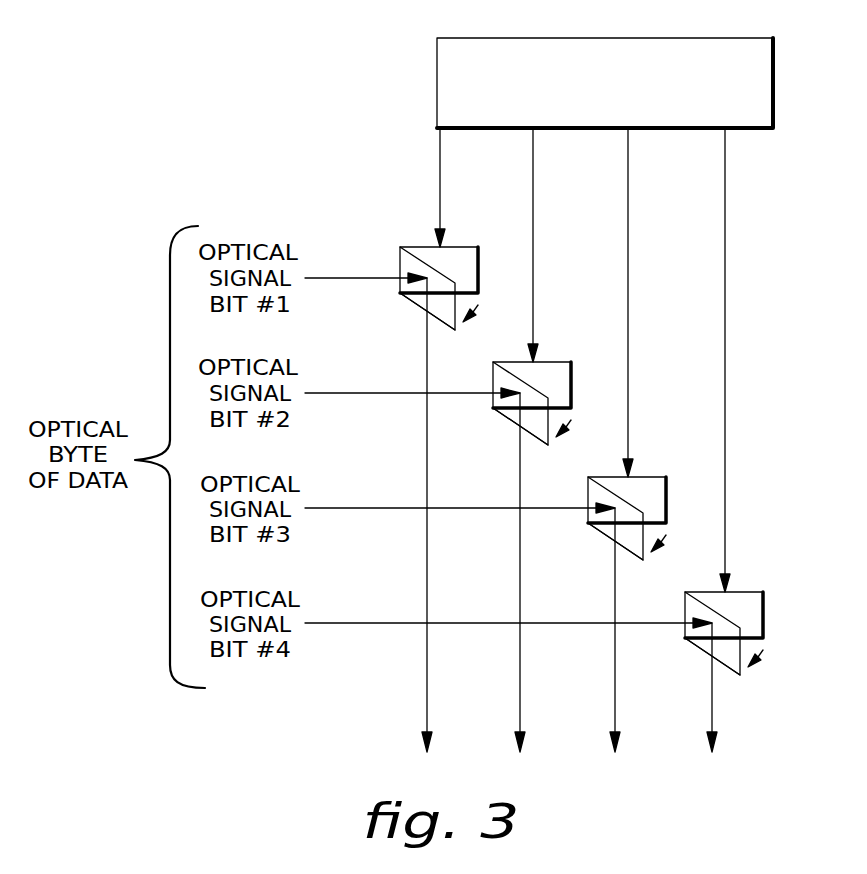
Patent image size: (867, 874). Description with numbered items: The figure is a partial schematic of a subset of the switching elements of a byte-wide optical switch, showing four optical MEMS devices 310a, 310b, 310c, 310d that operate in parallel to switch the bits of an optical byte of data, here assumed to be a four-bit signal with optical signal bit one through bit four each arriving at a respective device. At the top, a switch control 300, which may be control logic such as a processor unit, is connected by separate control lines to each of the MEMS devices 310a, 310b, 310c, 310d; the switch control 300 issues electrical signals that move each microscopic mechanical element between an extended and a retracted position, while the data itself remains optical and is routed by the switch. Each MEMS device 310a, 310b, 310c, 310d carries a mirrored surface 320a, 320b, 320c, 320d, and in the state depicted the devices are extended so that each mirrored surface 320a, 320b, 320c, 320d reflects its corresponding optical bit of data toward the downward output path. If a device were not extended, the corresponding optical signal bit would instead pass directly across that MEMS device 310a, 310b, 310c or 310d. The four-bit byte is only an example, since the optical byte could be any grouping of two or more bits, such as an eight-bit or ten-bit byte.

The switch control 300 is at (437, 79).
The MEMS device 310a is at (462, 247).
The MEMS device 310b is at (555, 362).
The MEMS device 310c is at (650, 477).
The MEMS device 310d is at (747, 592).
The mirrored surface 320a is at (443, 302).
The mirrored surface 320b is at (536, 417).
The mirrored surface 320c is at (631, 532).
The mirrored surface 320d is at (728, 647).